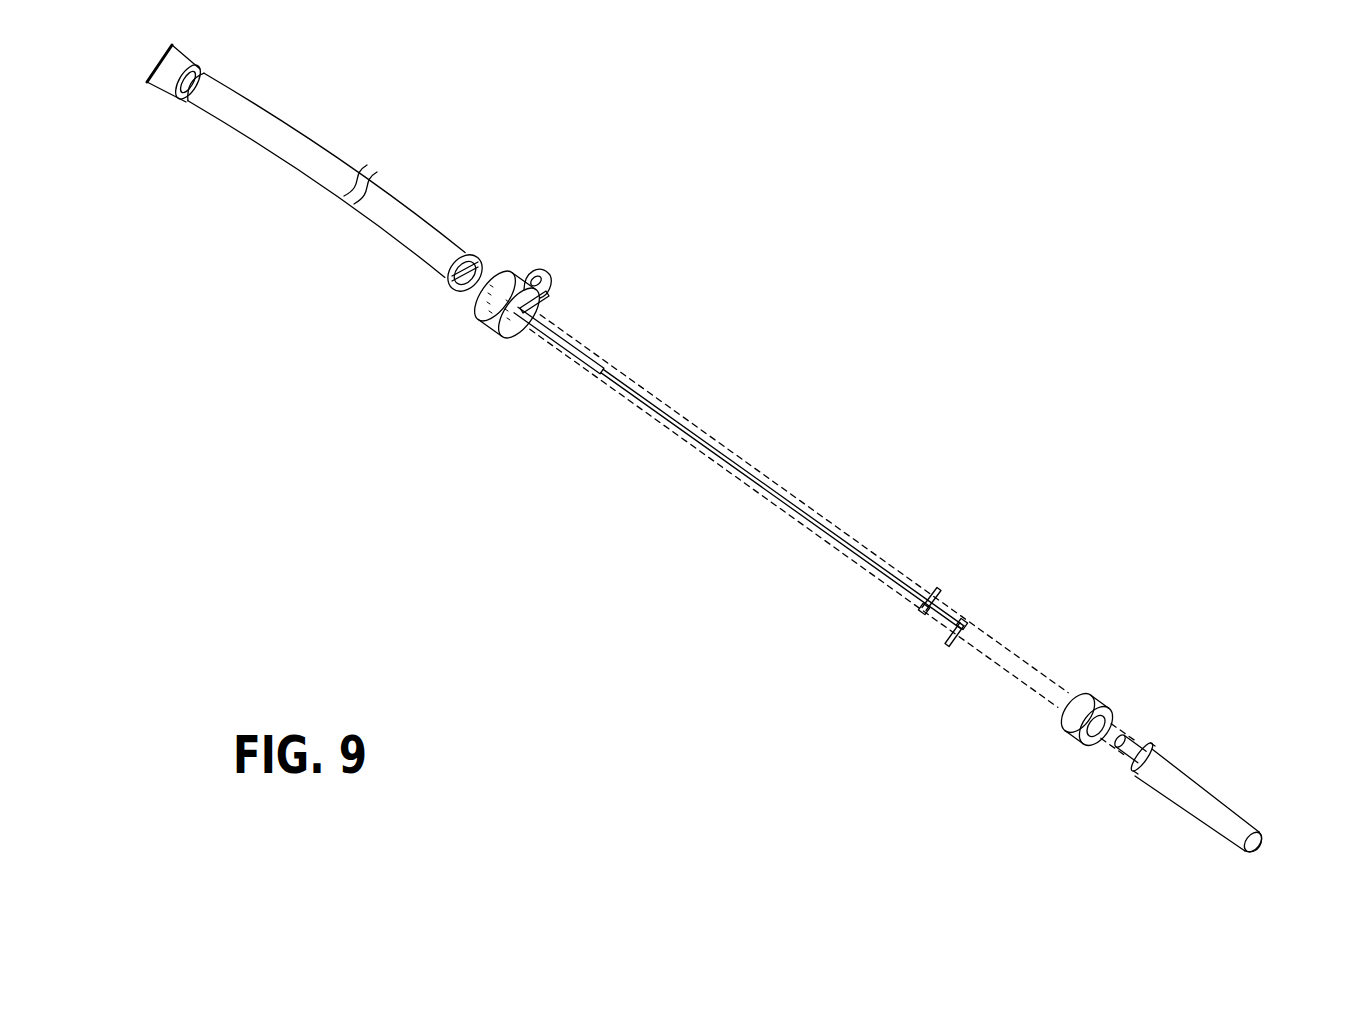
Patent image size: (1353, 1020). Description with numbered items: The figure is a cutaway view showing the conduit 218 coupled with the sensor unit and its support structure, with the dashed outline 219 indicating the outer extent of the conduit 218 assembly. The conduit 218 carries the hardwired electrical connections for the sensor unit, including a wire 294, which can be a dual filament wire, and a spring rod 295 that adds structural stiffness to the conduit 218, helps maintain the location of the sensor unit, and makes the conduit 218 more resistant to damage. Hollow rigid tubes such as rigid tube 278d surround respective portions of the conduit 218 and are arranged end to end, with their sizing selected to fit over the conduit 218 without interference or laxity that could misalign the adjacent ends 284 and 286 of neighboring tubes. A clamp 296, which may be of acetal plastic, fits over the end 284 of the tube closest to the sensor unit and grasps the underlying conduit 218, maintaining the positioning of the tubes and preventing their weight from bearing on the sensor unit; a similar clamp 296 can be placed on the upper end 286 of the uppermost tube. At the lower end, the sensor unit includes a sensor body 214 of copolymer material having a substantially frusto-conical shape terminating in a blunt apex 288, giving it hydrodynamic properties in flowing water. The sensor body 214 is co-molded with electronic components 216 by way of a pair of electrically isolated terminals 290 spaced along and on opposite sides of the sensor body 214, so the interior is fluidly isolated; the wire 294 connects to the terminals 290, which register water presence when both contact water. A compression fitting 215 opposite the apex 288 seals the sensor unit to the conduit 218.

The sensor body 214 is at (1208, 805).
The compression fitting 215 is at (1147, 750).
The electronic components 216 is at (968, 594).
The conduit 218 is at (712, 411).
The outer sheath 219 is at (801, 498).
The rigid tube 278d is at (280, 137).
The end of rigid tube 284 is at (176, 84).
The upper end of rigid tube 286 is at (187, 98).
The blunt apex 288 is at (1258, 842).
The electrically isolated terminals 290 is at (943, 592).
The wire 294 is at (617, 383).
The spring rod 295 is at (580, 348).
The clamp 296 is at (505, 275).